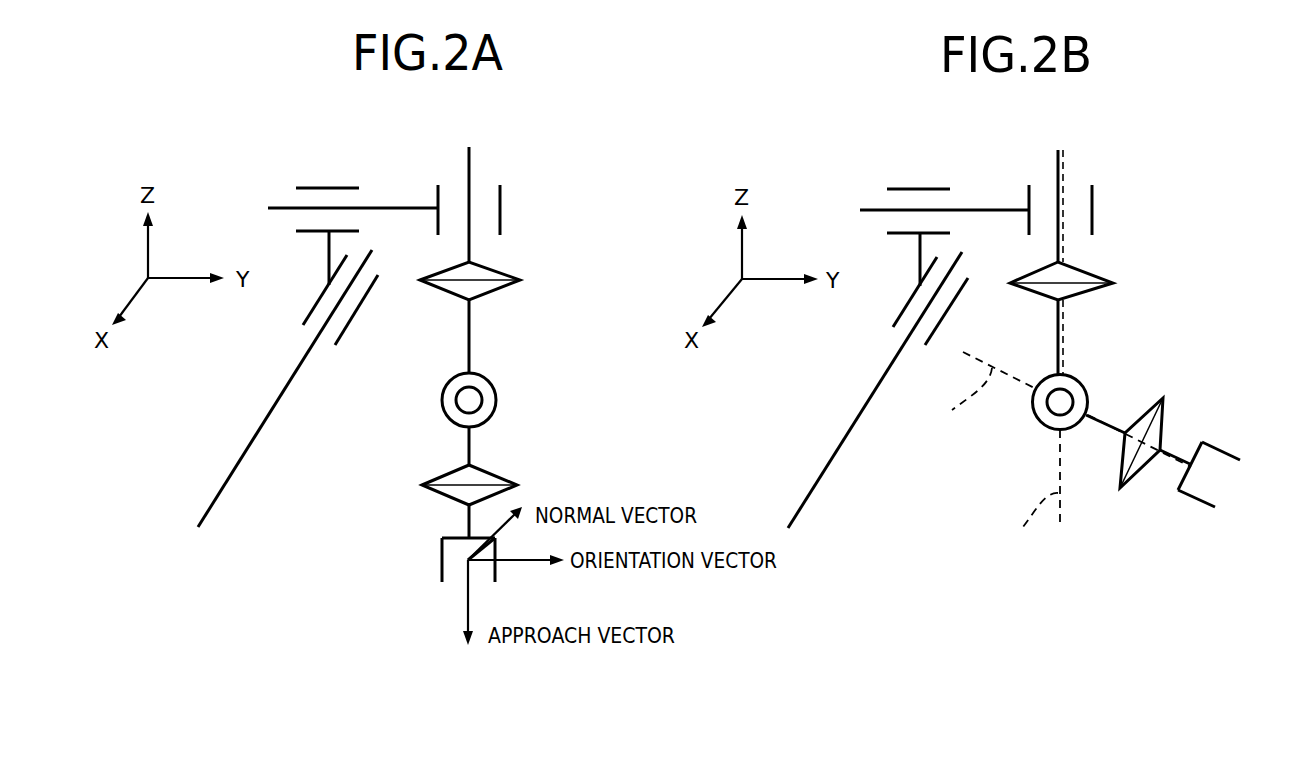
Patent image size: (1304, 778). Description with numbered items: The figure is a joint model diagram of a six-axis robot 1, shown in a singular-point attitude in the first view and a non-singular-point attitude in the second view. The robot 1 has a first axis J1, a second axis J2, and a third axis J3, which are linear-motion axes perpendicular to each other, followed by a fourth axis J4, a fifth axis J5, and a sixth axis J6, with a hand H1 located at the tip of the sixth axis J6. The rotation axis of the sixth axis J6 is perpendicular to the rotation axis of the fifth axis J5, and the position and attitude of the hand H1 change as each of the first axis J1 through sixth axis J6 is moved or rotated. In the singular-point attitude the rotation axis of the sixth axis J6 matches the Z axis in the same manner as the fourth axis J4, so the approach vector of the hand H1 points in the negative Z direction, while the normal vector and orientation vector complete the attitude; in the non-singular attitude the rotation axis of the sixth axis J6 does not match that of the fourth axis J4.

In FIG. 2A, the robot 1 is at (416, 155).
In FIG. 2B, the robot 1 is at (1007, 157).
In FIG. 2A, the first axis J1 is at (223, 487).
In FIG. 2B, the first axis J1 is at (817, 490).
In FIG. 2A, the second axis J2 is at (284, 208).
In FIG. 2B, the second axis J2 is at (877, 210).
In FIG. 2A, the third axis J3 is at (472, 157).
In FIG. 2B, the third axis J3 is at (1065, 160).
In FIG. 2A, the fourth axis J4 is at (520, 280).
In FIG. 2B, the fourth axis J4 is at (1113, 283).
In FIG. 2A, the fifth axis J5 is at (497, 398).
In FIG. 2B, the fifth axis J5 is at (1088, 400).
In FIG. 2A, the sixth axis J6 is at (517, 485).
In FIG. 2B, the sixth axis J6 is at (1166, 412).
In FIG. 2A, the hand H1 is at (442, 561).
In FIG. 2B, the hand H1 is at (1197, 503).